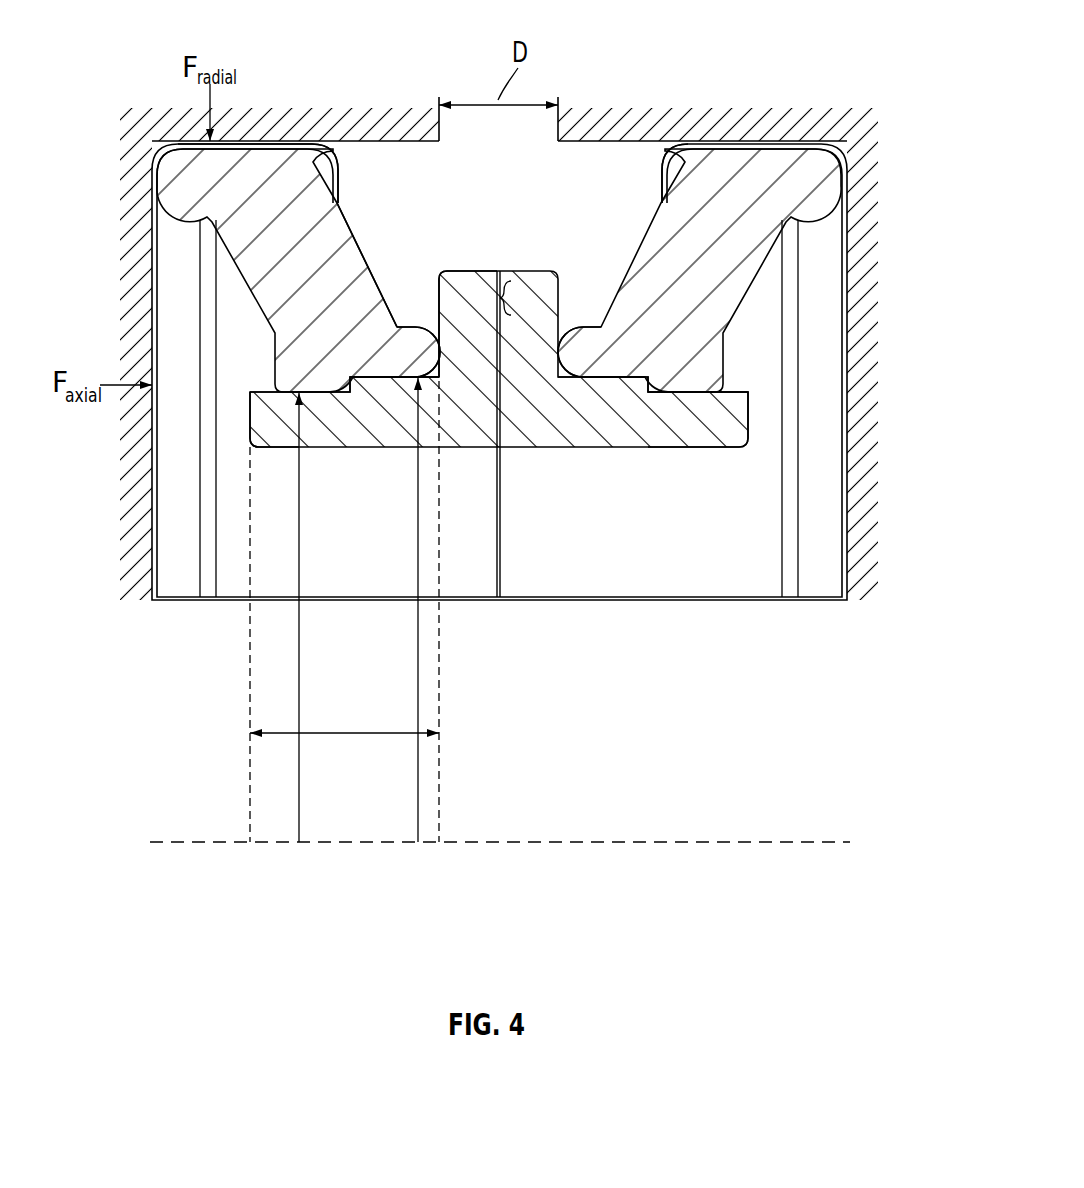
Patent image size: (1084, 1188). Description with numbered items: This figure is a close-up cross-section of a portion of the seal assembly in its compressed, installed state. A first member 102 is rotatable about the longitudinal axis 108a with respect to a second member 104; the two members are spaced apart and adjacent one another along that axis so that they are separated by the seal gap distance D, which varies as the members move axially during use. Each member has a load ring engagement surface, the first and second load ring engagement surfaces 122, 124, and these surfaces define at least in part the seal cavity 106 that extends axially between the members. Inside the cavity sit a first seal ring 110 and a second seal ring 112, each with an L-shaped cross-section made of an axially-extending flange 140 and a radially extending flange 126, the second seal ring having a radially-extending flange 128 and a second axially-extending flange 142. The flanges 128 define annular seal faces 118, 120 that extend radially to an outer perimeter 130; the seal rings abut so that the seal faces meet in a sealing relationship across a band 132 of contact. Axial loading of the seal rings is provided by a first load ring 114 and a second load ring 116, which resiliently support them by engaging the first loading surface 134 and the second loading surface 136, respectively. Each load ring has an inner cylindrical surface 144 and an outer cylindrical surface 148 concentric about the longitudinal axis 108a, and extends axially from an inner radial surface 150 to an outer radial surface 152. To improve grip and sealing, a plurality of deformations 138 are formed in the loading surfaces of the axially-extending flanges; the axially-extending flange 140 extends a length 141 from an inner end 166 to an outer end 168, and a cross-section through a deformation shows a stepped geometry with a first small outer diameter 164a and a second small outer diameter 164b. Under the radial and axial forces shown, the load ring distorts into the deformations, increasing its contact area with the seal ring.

The first member 102 is at (383, 113).
The second member 104 is at (612, 112).
The seal cavity 106 is at (618, 142).
The longitudinal axis 108a is at (790, 845).
The first seal ring 110 is at (413, 431).
The second seal ring 112 is at (617, 423).
The first load ring 114 is at (318, 278).
The second load ring 116 is at (722, 276).
The first seal face 118 is at (503, 323).
The second seal face 120 is at (495, 308).
The first load ring engagement surface 122 is at (358, 145).
The second load ring engagement surface 124 is at (640, 147).
The radially extending flange 126 is at (465, 287).
The radially-extending flange 128 is at (535, 272).
The outer perimeter 130 is at (498, 271).
The band of contact 132 is at (526, 298).
The first loading surface 134 is at (380, 372).
The second loading surface 136 is at (622, 375).
The deformations 138 is at (258, 388).
The axially-extending flange 140 is at (250, 417).
The length 141 is at (345, 735).
The second axially-extending flange 142 is at (698, 420).
The inner cylindrical surface 144 is at (367, 379).
The outer cylindrical surface 148 is at (248, 140).
The inner radial surface 150 is at (347, 213).
The outer radial surface 152 is at (152, 437).
The first small outer diameter 164a is at (299, 680).
The second small outer diameter 164b is at (418, 667).
The inner end 166 is at (441, 525).
The outer end 168 is at (250, 408).